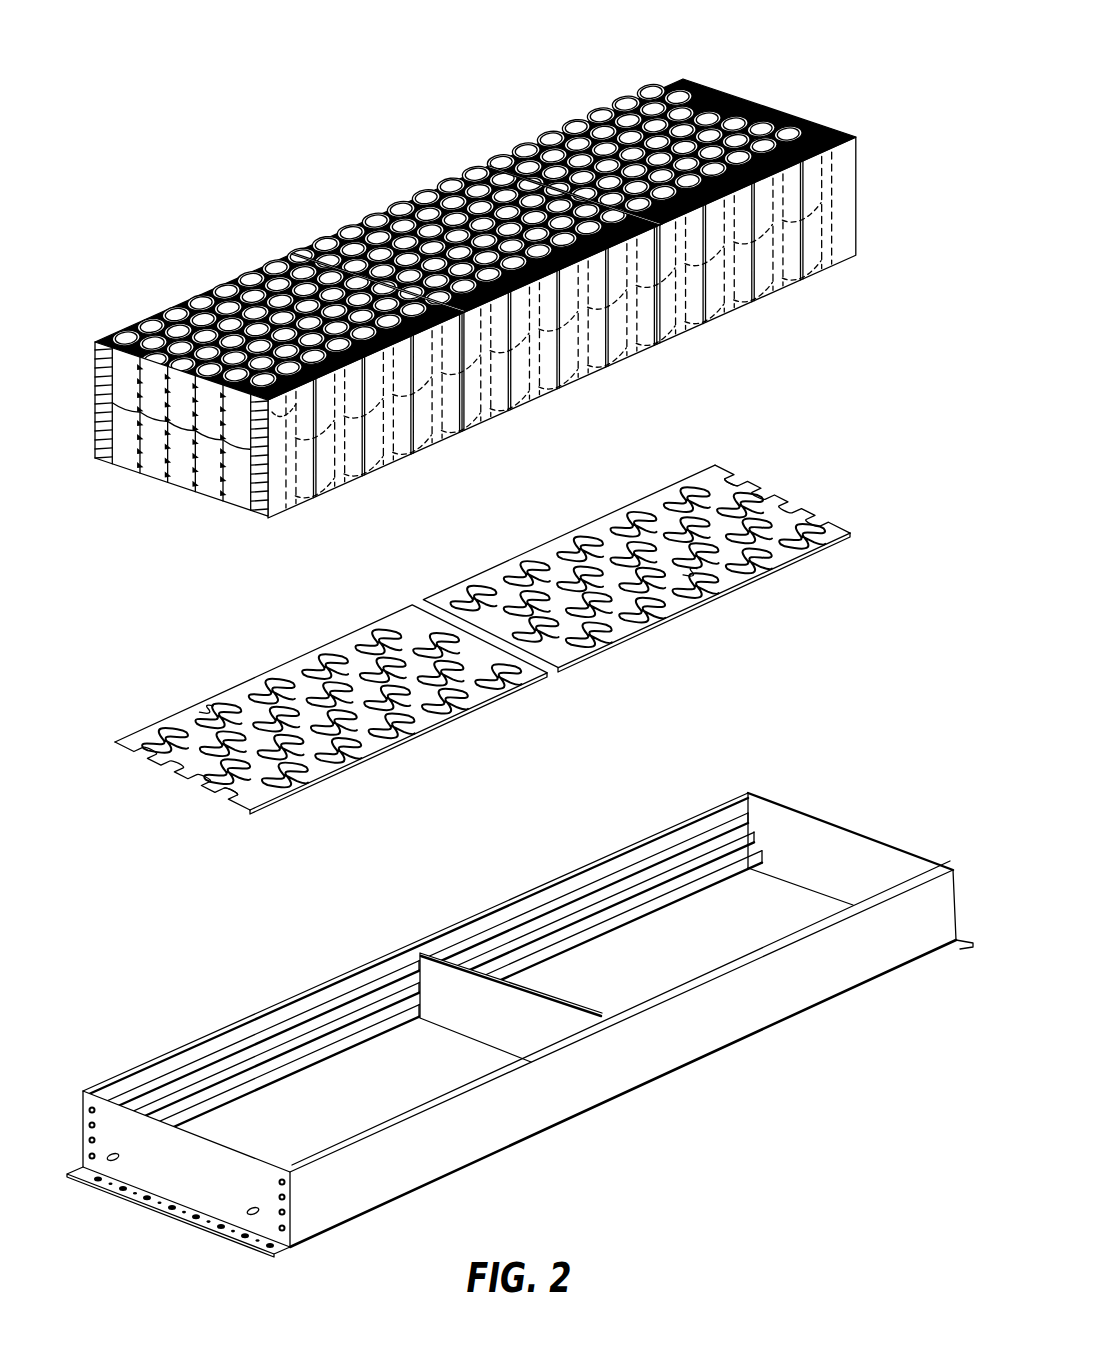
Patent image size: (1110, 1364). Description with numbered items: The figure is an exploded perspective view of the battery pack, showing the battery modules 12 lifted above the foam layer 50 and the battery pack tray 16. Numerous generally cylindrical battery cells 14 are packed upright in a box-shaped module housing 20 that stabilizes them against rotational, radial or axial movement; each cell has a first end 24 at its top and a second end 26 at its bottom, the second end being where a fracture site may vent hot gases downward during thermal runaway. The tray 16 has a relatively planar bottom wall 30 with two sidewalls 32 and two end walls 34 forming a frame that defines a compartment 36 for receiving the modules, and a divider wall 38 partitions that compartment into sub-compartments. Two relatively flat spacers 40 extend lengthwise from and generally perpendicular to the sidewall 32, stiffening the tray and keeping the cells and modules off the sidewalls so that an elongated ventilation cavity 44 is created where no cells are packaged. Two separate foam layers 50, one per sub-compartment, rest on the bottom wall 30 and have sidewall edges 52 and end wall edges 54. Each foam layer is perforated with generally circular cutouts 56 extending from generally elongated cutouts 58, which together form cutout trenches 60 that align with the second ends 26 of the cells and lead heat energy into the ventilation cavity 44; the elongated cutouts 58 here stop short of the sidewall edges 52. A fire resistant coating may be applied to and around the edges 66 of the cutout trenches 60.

The battery module 12 is at (466, 301).
The battery cell 14 is at (704, 96).
The battery pack tray 16 is at (290, 1250).
The module housing 20 is at (103, 386).
The first end 24 is at (283, 414).
The second end 26 is at (276, 508).
The bottom wall 30 is at (520, 1039).
The sidewall 32 is at (625, 895).
The end wall 34 is at (853, 830).
The compartment 36 is at (614, 992).
The divider wall 38 is at (458, 978).
The spacer 40 is at (551, 940).
The ventilation cavity 44 is at (766, 869).
The foam layer 50 is at (495, 627).
The sidewall edge 52 is at (537, 548).
The end wall edge 54 is at (755, 488).
The circular cutout 56 is at (617, 522).
The elongated cutout 58 is at (627, 522).
The cutout trench 60 is at (712, 492).
The edge 66 is at (695, 573).